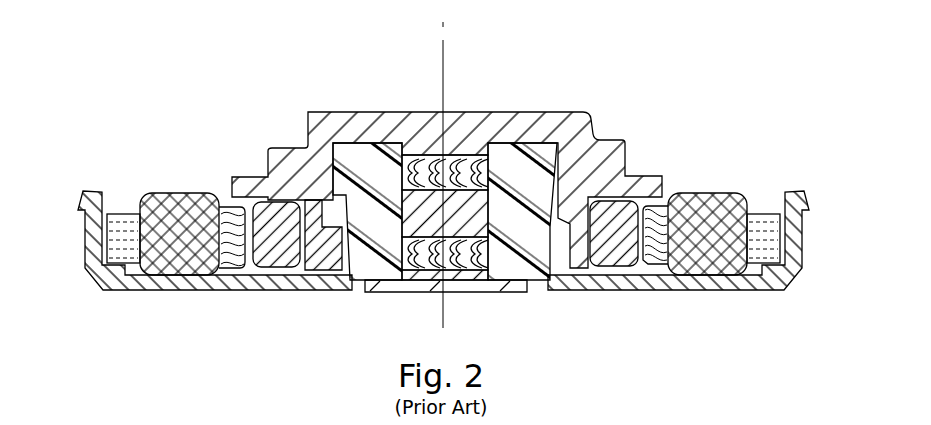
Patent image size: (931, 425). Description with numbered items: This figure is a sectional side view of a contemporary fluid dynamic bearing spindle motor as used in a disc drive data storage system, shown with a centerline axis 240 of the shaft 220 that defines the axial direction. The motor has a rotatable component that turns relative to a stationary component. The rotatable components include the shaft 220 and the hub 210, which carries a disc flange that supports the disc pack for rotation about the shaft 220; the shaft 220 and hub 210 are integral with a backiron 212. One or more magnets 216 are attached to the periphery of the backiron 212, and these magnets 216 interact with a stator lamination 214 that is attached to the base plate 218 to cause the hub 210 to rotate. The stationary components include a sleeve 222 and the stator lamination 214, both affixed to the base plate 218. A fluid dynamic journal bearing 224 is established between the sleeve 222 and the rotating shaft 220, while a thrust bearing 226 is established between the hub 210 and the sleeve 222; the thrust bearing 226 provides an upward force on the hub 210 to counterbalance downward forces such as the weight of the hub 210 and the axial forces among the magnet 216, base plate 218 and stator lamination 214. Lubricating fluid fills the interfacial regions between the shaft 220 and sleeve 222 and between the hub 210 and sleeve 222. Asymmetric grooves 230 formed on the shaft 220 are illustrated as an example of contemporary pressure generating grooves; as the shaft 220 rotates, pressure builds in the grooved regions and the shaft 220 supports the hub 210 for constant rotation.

The hub 210 is at (614, 160).
The backiron 212 is at (310, 230).
The stator lamination 214 is at (180, 248).
The magnet 216 is at (278, 247).
The base plate 218 is at (600, 291).
The shaft 220 is at (373, 282).
The sleeve 222 is at (372, 153).
The journal bearing 224 is at (522, 292).
The thrust bearing 226 is at (510, 140).
The asymmetric grooves 230 is at (467, 150).
The centerline axis 240 is at (443, 47).